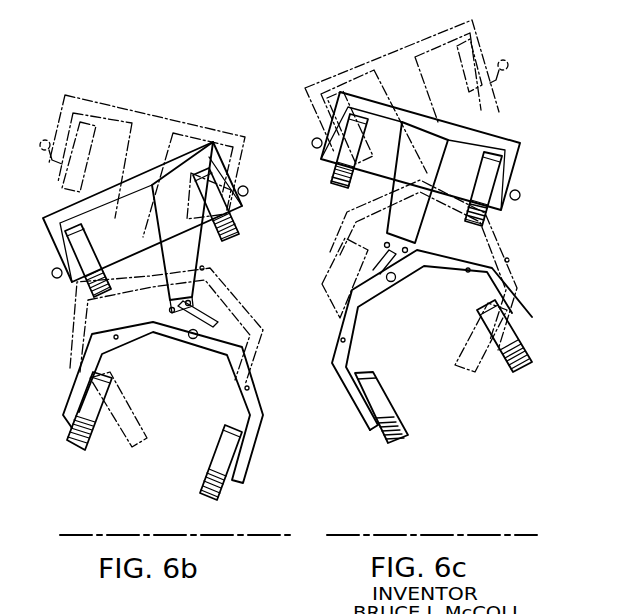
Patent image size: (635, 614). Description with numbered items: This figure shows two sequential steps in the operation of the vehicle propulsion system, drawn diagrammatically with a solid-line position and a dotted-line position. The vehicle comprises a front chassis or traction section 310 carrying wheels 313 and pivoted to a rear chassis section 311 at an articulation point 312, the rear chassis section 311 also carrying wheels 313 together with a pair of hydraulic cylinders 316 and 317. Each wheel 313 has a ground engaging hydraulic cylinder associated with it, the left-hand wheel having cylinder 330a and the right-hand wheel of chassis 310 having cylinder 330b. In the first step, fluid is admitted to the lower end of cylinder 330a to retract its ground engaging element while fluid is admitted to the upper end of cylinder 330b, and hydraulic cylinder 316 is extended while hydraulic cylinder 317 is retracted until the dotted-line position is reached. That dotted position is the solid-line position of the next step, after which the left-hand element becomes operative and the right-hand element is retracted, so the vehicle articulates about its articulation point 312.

In FIG. 6B, the front chassis section 310 is at (58, 218).
In FIG. 6C, the front chassis section 310 is at (502, 138).
In FIG. 6B, the rear chassis section 311 is at (248, 395).
In FIG. 6C, the rear chassis section 311 is at (343, 352).
In FIG. 6B, the articulation point 312 is at (193, 339).
In FIG. 6C, the articulation point 312 is at (395, 282).
In FIG. 6B, the wheel 313 is at (230, 238).
In FIG. 6C, the wheel 313 is at (333, 190).
In FIG. 6B, the hydraulic cylinder 316 is at (170, 311).
In FIG. 6B, the hydraulic cylinder 317 is at (210, 322).
In FIG. 6B, the hydraulic cylinder 330a is at (53, 278).
In FIG. 6C, the hydraulic cylinder 330a is at (312, 142).
In FIG. 6B, the hydraulic cylinder 330b is at (247, 196).
In FIG. 6C, the hydraulic cylinder 330b is at (519, 199).